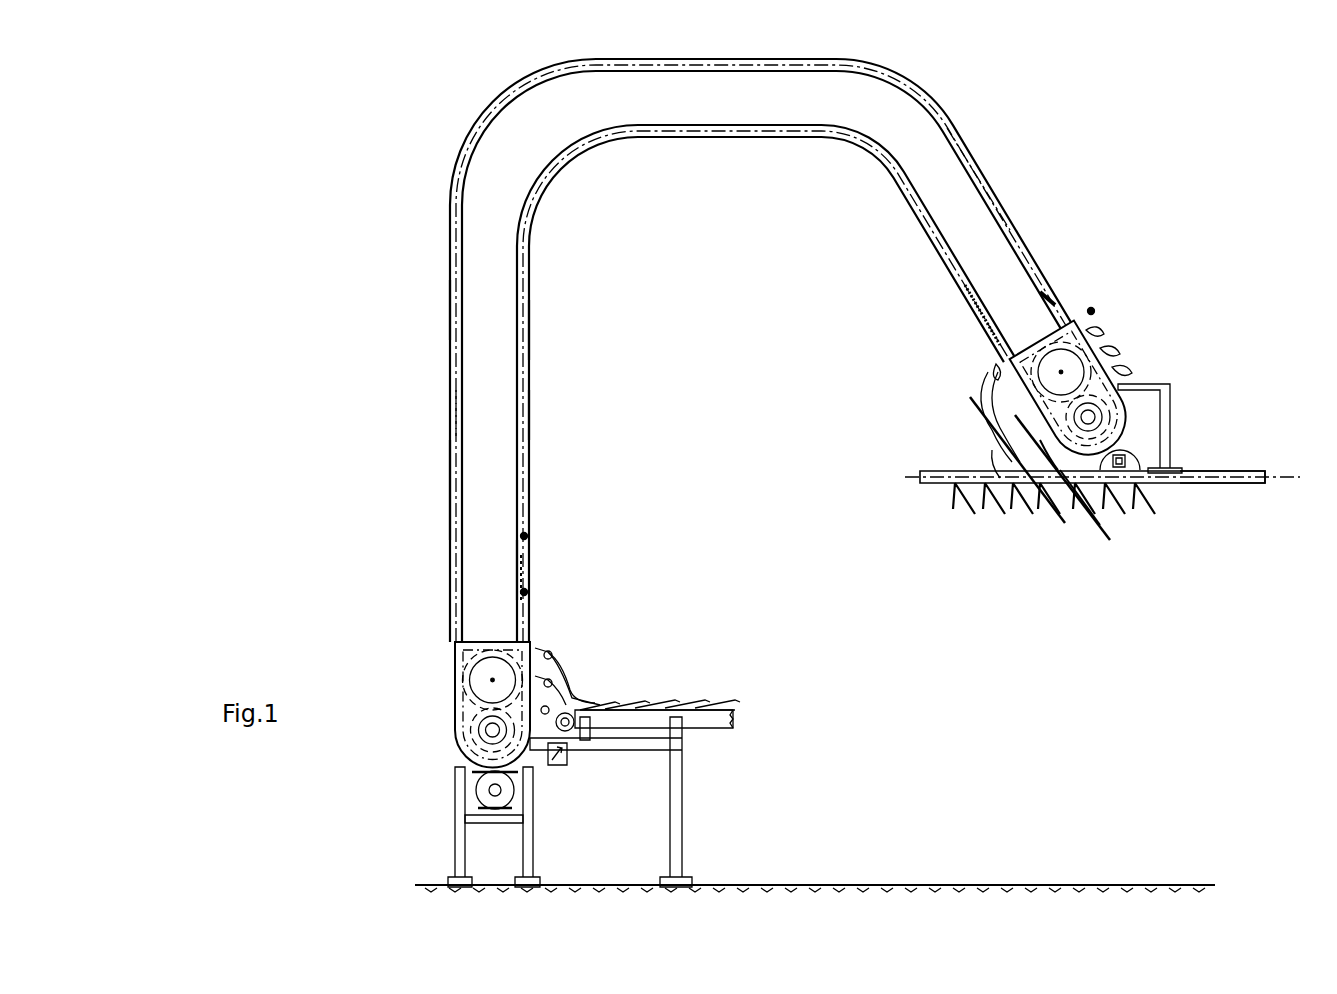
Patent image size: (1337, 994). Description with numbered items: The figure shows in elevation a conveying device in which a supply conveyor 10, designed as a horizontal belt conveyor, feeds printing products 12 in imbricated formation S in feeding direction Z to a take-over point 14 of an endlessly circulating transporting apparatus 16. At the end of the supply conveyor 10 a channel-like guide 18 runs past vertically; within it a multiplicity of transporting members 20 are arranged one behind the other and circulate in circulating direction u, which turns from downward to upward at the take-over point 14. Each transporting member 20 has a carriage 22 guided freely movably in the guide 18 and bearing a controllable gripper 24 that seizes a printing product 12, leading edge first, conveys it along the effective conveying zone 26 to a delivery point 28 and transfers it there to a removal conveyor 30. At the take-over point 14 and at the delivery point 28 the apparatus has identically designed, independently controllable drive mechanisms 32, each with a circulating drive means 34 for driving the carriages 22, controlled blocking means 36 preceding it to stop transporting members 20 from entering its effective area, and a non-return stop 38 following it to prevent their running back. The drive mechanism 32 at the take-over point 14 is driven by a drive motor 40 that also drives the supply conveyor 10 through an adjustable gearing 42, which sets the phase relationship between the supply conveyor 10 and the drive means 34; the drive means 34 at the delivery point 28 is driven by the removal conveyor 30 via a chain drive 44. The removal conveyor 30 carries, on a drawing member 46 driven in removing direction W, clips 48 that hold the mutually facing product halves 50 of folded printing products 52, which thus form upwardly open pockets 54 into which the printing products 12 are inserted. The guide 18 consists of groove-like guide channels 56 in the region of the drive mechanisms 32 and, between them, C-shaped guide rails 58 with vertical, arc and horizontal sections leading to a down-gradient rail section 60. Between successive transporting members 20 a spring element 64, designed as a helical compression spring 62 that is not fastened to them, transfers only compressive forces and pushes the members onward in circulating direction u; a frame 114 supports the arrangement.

The supply conveyor 10 is at (723, 745).
The printing product 12 is at (705, 690).
The take-over point 14 is at (598, 645).
The transporting apparatus 16 is at (432, 553).
The guide 18 is at (450, 488).
The transporting member 20 is at (548, 598).
The carriage 22 is at (978, 308).
The gripper 24 is at (994, 370).
The effective conveying zone 26 is at (532, 416).
The delivery point 28 is at (1080, 558).
The removal conveyor 30 is at (920, 490).
The drive mechanism 32 is at (455, 714).
The drive means 34 is at (472, 724).
The blocking means 36 is at (1025, 350).
The non-return stop 38 is at (1058, 298).
The drive motor 40 is at (505, 800).
The adjustable gearing 42 is at (563, 766).
The chain drive 44 is at (1125, 445).
The drawing member 46 is at (1212, 485).
The clip 48 is at (950, 490).
The product half 50 is at (1028, 505).
The folded printing product 52 is at (1000, 510).
The pocket 54 is at (990, 470).
The guide channel 56 is at (456, 660).
The guide rail 58 is at (531, 326).
The rail section 60 is at (952, 268).
The helical compression spring 62 is at (534, 562).
The spring element 64 is at (518, 578).
The frame 114 is at (455, 840).
The imbricated formation S is at (640, 692).
The feeding direction Z is at (665, 688).
The removing direction W is at (1312, 477).
The circulating direction u is at (742, 159).